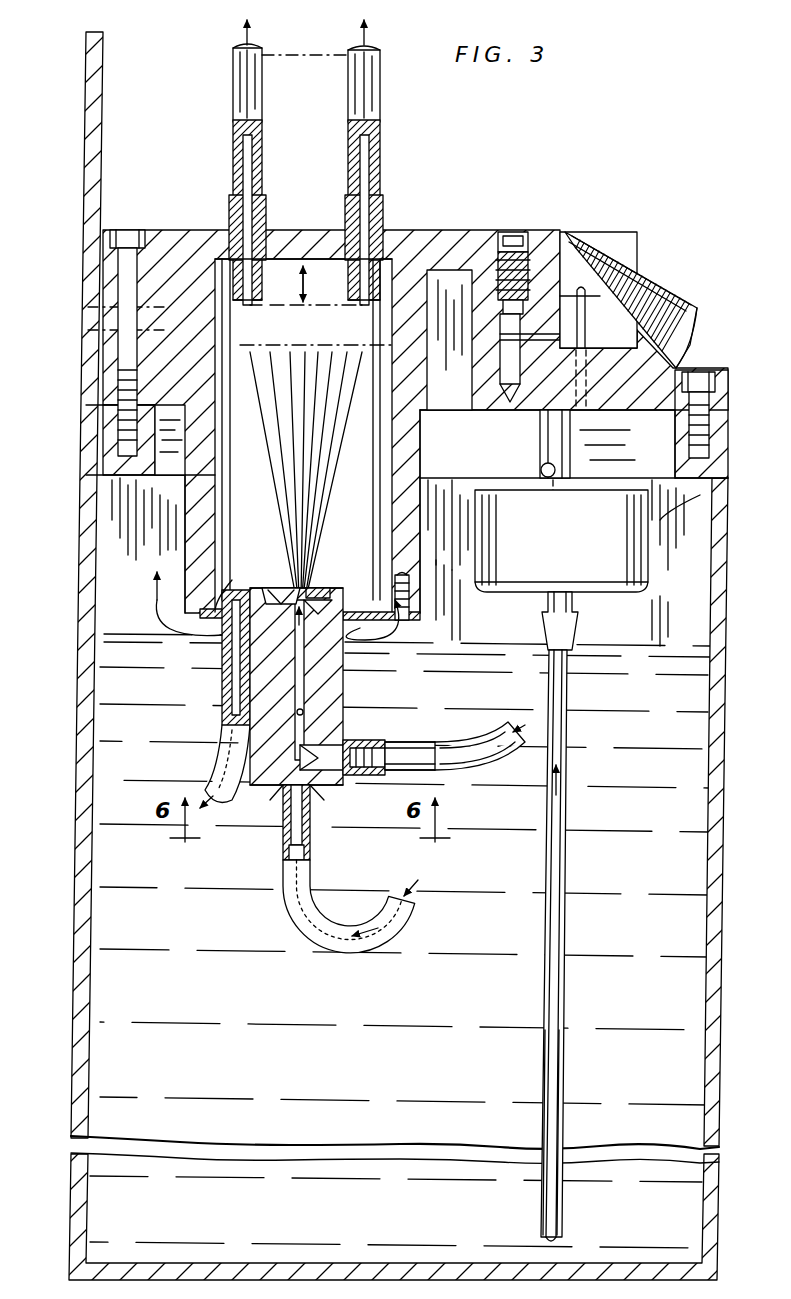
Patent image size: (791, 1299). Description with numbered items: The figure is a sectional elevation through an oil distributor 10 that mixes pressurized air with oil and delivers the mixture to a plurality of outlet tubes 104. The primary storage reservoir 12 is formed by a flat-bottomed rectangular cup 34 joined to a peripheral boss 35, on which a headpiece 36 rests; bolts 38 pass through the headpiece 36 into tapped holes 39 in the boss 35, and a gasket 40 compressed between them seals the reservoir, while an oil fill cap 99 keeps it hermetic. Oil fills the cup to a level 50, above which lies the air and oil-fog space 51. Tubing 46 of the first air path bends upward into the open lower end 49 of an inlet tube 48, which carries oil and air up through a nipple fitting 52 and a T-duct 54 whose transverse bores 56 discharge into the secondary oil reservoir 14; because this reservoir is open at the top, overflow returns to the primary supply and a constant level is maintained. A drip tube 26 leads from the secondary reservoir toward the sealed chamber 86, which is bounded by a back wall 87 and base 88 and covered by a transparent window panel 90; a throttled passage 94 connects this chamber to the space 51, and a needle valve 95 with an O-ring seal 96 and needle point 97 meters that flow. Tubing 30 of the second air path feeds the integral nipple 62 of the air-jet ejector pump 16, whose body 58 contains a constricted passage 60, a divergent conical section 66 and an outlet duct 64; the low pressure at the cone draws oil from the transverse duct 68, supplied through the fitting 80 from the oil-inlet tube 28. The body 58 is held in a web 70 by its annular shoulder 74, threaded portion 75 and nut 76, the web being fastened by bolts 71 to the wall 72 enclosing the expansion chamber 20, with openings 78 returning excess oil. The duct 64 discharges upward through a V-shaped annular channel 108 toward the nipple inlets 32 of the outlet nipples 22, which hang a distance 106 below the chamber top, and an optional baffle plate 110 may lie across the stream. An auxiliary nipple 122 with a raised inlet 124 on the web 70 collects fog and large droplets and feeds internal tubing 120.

The oil distributor 10 is at (598, 180).
The primary storage reservoir 12 is at (82, 790).
The secondary oil reservoir 14 is at (654, 556).
The air-jet ejector pump 16 is at (346, 668).
The expansion chamber 20 is at (276, 523).
The outlet nipples 22 is at (266, 212).
The drip tube 26 is at (615, 333).
The oil-inlet tube 28 is at (487, 774).
The tubing 30 is at (283, 886).
The nipple inlets 32 is at (364, 300).
The rectangular cup 34 is at (80, 884).
The peripheral boss 35 is at (96, 474).
The headpiece 36 is at (400, 229).
The bolts 38 is at (136, 229).
The tapped holes 39 is at (104, 418).
The gasket 40 is at (728, 420).
The smaller diameter tubing 46 is at (555, 1240).
The inlet tube 48 is at (568, 860).
The lower end 49 is at (540, 1218).
The oil level 50 is at (642, 648).
The air and oil-fog space 51 is at (682, 515).
The nipple fitting 52 is at (546, 612).
The T-duct 54 is at (571, 433).
The transverse bores 56 is at (540, 470).
The body 58 is at (346, 702).
The constricted passage 60 is at (317, 788).
The integral nipple 62 is at (287, 828).
The outlet duct 64 is at (296, 714).
The divergent conical section 66 is at (280, 784).
The transverse duct 68 is at (302, 748).
The web 70 is at (238, 588).
The bolts 71 is at (405, 620).
The wall 72 is at (187, 503).
The annular shoulder 74 is at (296, 624).
The threaded portion 75 is at (322, 598).
The nut 76 is at (345, 598).
The openings 78 is at (410, 588).
The fitting 80 is at (364, 774).
The sealed chamber 86 is at (642, 282).
The back wall 87 is at (548, 240).
The base 88 is at (660, 403).
The transparent window panel 90 is at (561, 235).
The throttled passage 94 is at (543, 362).
The needle valve 95 is at (506, 238).
The O-ring seal 96 is at (498, 262).
The needle point 97 is at (470, 388).
The oil fill cap 99 is at (692, 312).
The outlet tubes 104 is at (233, 103).
The distance 106 is at (316, 292).
The V-shaped annular channel 108 is at (283, 588).
The baffle plate 110 is at (340, 360).
The internal tubing 120 is at (212, 750).
The nipple 122 is at (224, 640).
The inlet 124 is at (245, 598).